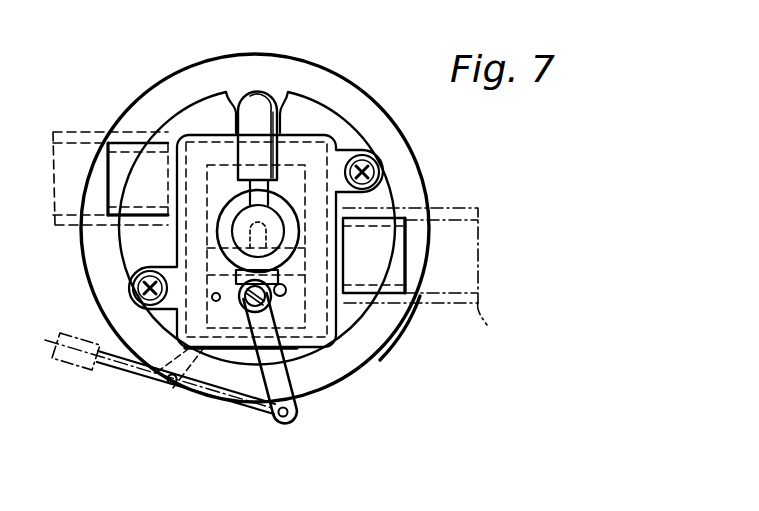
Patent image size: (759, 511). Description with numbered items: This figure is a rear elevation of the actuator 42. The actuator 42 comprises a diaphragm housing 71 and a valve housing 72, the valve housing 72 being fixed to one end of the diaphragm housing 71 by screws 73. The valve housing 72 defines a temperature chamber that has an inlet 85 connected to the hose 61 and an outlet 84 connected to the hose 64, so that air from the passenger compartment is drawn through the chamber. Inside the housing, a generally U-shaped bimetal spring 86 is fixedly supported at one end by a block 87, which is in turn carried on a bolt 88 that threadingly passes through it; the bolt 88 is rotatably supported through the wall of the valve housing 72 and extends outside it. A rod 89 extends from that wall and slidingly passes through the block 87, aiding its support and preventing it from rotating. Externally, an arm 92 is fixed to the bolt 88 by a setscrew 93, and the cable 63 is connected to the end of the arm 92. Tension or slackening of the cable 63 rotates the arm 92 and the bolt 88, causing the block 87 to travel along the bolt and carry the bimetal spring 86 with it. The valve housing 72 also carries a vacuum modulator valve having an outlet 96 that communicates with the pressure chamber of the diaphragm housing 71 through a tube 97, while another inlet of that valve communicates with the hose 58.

The actuator 42 is at (482, 171).
The hose 58 is at (296, 260).
The hose 61 is at (79, 135).
The cable 63 is at (107, 364).
The hose 64 is at (474, 316).
The diaphragm housing 71 is at (387, 321).
The valve housing 72 is at (330, 150).
The screws 73 is at (372, 193).
The outlet 84 is at (392, 253).
The inlet 85 is at (133, 168).
The bimetal spring 86 is at (304, 120).
The block 87 is at (284, 294).
The bolt 88 is at (286, 376).
The rod 89 is at (217, 302).
The arm 92 is at (297, 420).
The setscrew 93 is at (298, 338).
The outlet 96 is at (241, 189).
The tube 97 is at (258, 100).